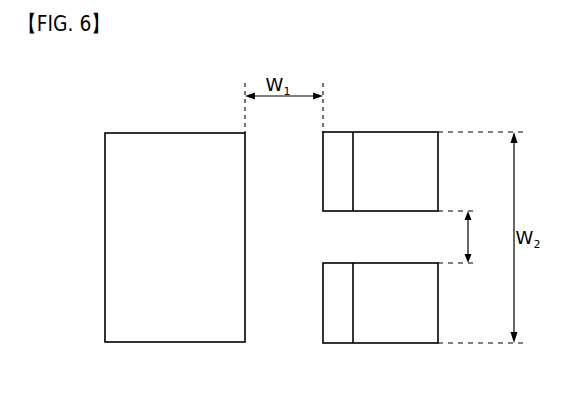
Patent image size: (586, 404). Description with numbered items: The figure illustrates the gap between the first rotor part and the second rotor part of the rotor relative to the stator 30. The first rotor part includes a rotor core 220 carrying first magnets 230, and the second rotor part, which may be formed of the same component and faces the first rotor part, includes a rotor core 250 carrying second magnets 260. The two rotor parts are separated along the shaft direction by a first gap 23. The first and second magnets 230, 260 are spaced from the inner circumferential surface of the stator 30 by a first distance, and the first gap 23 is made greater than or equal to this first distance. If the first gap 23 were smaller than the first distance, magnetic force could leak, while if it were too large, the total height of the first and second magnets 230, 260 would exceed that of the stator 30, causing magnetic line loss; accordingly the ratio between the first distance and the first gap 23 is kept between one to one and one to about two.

The stator 30 is at (159, 246).
The rotor core 220 is at (375, 178).
The first magnets 230 is at (337, 142).
The rotor core 250 is at (375, 313).
The second magnets 260 is at (338, 335).
The first gap 23 is at (467, 237).